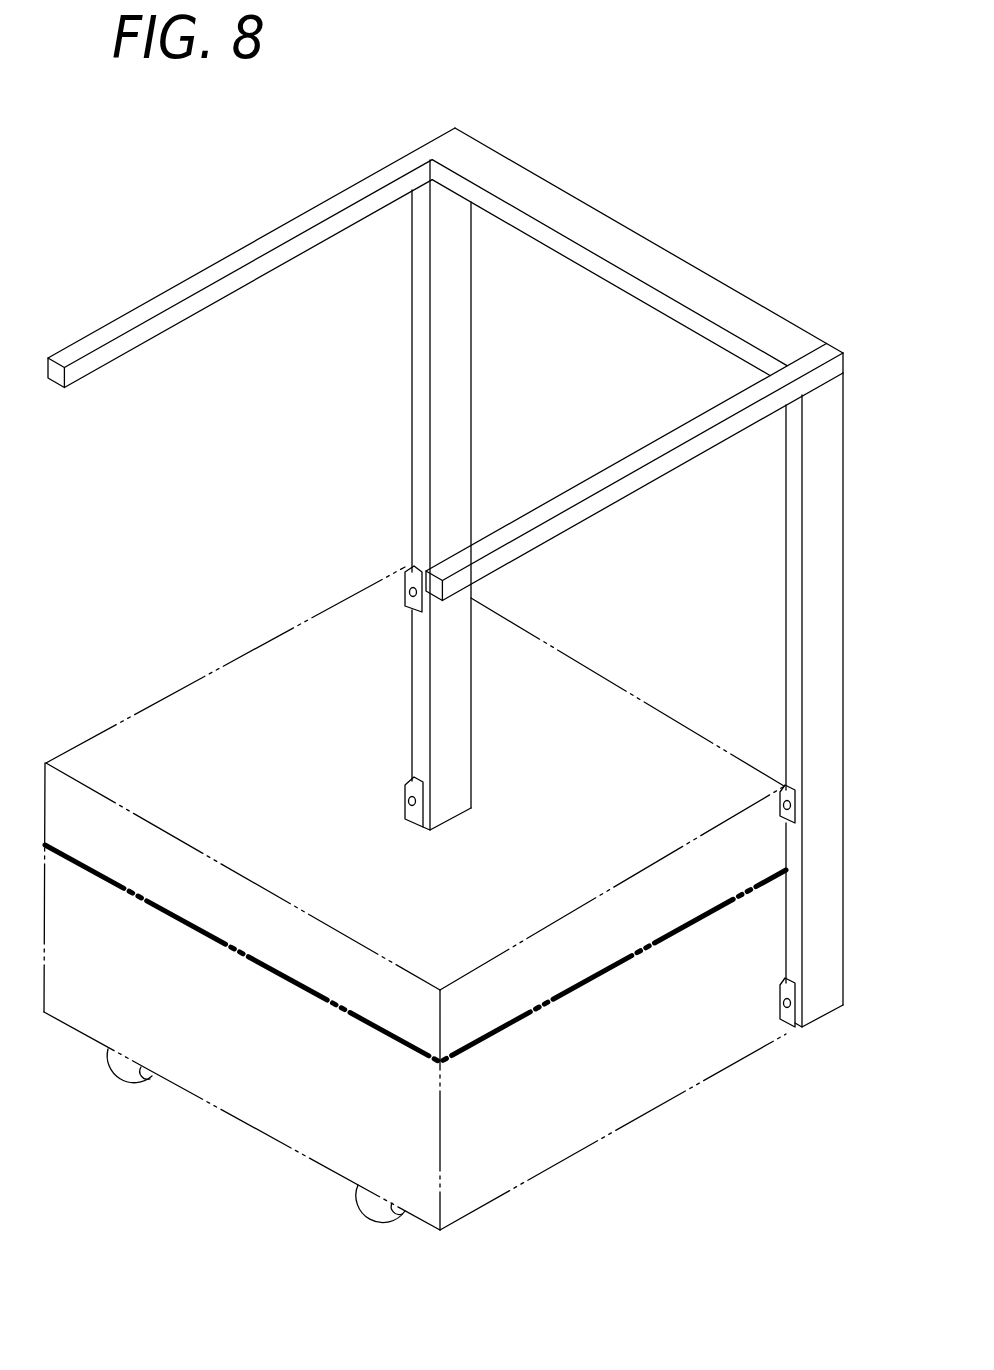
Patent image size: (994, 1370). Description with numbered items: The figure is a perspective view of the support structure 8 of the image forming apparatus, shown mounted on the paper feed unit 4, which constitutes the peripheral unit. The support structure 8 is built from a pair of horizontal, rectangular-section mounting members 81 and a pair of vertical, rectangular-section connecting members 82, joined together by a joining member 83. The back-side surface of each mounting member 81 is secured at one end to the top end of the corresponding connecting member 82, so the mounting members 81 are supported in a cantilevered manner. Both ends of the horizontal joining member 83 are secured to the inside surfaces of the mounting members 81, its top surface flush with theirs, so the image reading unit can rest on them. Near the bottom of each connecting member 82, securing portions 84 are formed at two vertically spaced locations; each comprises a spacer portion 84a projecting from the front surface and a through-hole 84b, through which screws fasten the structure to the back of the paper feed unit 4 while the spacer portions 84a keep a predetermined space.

The support structure 8 is at (786, 183).
The mounting member 81 is at (213, 263).
The connecting member 82 is at (411, 400).
The joining member 83 is at (643, 234).
The securing portion 84 is at (404, 568).
The spacer portion 84a is at (778, 988).
The through-hole 84b is at (781, 1004).
The paper feed unit 4 is at (208, 670).